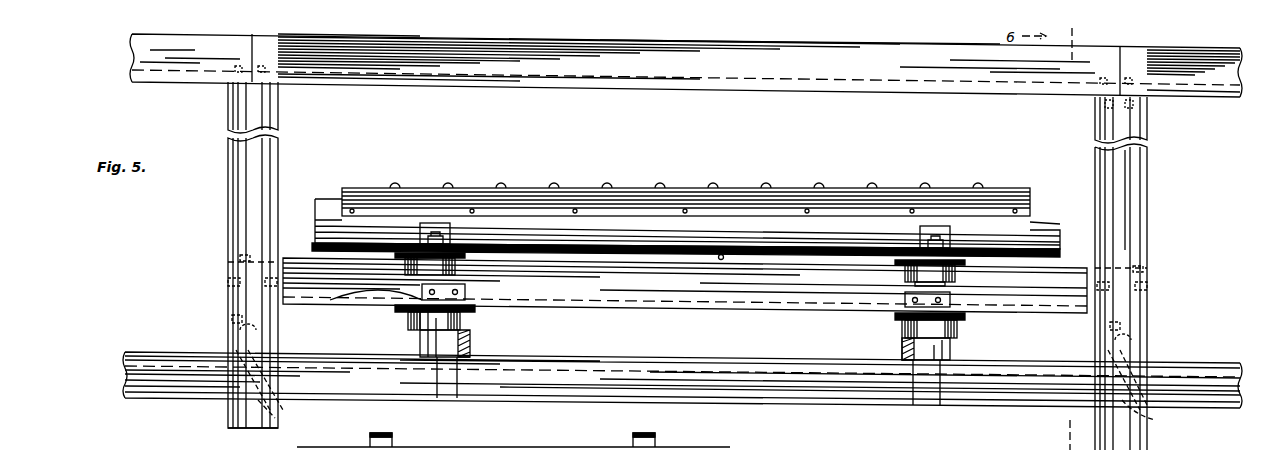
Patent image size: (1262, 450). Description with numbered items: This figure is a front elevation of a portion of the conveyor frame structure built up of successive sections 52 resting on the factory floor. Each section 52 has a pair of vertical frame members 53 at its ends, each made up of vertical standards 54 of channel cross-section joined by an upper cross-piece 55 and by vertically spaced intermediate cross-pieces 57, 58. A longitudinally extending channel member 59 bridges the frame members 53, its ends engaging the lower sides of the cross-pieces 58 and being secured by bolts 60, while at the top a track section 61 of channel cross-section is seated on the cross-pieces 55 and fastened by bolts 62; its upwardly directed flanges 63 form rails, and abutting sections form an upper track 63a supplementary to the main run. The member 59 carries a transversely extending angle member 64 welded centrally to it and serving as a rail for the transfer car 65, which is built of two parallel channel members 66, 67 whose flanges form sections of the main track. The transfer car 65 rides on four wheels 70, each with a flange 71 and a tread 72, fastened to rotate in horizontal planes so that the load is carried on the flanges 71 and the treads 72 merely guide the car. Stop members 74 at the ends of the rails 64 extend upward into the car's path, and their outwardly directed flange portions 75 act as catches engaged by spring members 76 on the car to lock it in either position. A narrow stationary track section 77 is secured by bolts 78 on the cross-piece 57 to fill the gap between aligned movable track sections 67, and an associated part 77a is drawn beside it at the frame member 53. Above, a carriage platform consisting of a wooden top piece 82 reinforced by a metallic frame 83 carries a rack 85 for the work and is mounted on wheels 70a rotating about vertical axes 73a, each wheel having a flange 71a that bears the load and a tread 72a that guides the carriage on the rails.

The section 52 is at (226, 443).
The vertical frame member 53 is at (220, 196).
The vertical standard 54 is at (1123, 178).
The upper cross-piece 55 is at (1135, 100).
The intermediate cross-piece 57 is at (232, 322).
The intermediate cross-piece 58 is at (258, 330).
The longitudinally extending member 59 is at (828, 392).
The bolt 60 is at (1130, 412).
The track section 61 is at (612, 70).
The bolt 62 is at (262, 62).
The upwardly directed flange 63 is at (358, 38).
The upper track 63a is at (732, 45).
The angle member 64 is at (465, 355).
The transfer car 65 is at (797, 294).
The longitudinal channel member 66 is at (240, 398).
The longitudinal channel member 67 is at (704, 294).
The wheel 70 is at (408, 318).
The wheel 70a is at (465, 255).
The flange 71 is at (477, 312).
The flange 71a is at (497, 254).
The tread 72 is at (470, 340).
The tread 72a is at (962, 280).
The vertical axis 73a is at (436, 228).
The stop member 74 is at (425, 340).
The flange portion 75 is at (395, 292).
The spring member 76 is at (470, 298).
The stationary track section 77 is at (228, 263).
The bolt head 77a is at (243, 256).
The bolt 78 is at (228, 282).
The wooden top piece 82 is at (696, 244).
The metallic frame 83 is at (722, 255).
The rack 85 is at (610, 215).